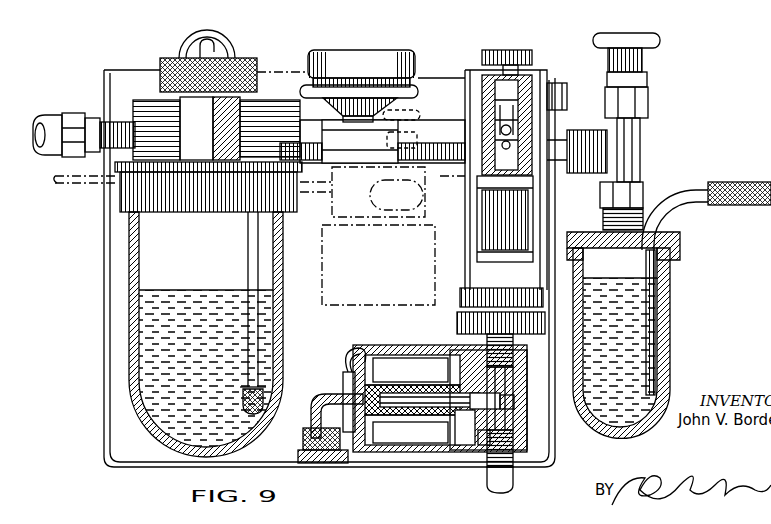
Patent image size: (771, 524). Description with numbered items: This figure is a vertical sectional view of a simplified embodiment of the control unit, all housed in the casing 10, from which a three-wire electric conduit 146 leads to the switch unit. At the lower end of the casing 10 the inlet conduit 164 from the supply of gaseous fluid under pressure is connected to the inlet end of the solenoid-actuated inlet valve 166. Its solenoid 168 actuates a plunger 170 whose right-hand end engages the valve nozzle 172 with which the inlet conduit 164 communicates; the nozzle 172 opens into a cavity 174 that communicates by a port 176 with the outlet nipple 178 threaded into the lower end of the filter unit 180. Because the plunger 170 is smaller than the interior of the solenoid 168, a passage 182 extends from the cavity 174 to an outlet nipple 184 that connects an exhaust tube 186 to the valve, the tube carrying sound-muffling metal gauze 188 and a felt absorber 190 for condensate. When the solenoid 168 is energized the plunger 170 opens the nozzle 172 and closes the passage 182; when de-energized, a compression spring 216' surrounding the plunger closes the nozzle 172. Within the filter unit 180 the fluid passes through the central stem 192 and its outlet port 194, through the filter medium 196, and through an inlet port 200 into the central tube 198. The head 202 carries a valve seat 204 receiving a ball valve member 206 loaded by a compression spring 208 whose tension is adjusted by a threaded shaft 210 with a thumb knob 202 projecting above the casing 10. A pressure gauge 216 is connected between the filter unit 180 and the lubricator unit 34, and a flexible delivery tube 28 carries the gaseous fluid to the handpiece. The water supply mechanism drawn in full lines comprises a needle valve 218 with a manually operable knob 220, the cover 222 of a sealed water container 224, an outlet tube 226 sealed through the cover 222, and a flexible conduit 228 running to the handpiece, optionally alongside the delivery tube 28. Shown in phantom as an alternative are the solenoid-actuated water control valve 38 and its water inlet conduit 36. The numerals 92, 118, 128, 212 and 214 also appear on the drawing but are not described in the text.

The casing 10 is at (102, 336).
The flexible delivery tube 28 is at (51, 118).
The lubricator unit 34 is at (140, 97).
The knurled cap with ring 118 is at (197, 42).
The filter bowl 92 is at (130, 263).
The three-wire electric conduit 146 is at (62, 186).
The solenoid-actuated water control valve 38 is at (322, 252).
The water inlet conduit 36 is at (428, 212).
The pressure gauge 216 is at (361, 74).
The handle bar 214 is at (300, 120).
The valve seat 204 is at (500, 150).
The threaded shaft 210 is at (530, 78).
The adjusting screw 212 is at (510, 56).
The compression spring 208 is at (497, 118).
The ball valve member 206 is at (525, 133).
The filter unit 180 is at (465, 240).
The central stem 192 is at (475, 275).
The outlet port 194 is at (462, 305).
The central tube 198 is at (482, 174).
The head 202 is at (548, 103).
The manually operable knob 220 is at (660, 40).
The needle valve 218 is at (640, 170).
The filter medium 196 is at (547, 197).
The inlet port 200 is at (547, 220).
The cover 222 is at (680, 247).
The sealed water container 224 is at (672, 320).
The outlet tube 226 is at (655, 352).
The flexible conduit 228 is at (735, 205).
The solenoid 168 is at (385, 452).
The cavity 174 is at (410, 370).
The plunger 170 is at (410, 432).
The passage 182 is at (403, 383).
The port 176 is at (522, 377).
The valve nozzle 172 is at (507, 410).
The solenoid-actuated inlet valve 166 is at (470, 425).
The compression spring 216' is at (464, 467).
The outlet nipple 178 is at (487, 340).
The inlet conduit 164 is at (492, 486).
The outlet nipple 184 is at (355, 378).
The exhaust tube 186 is at (345, 395).
The metal gauze 188 is at (300, 440).
The absorber 190 is at (315, 463).
The valve assembly 128 is at (401, 4).